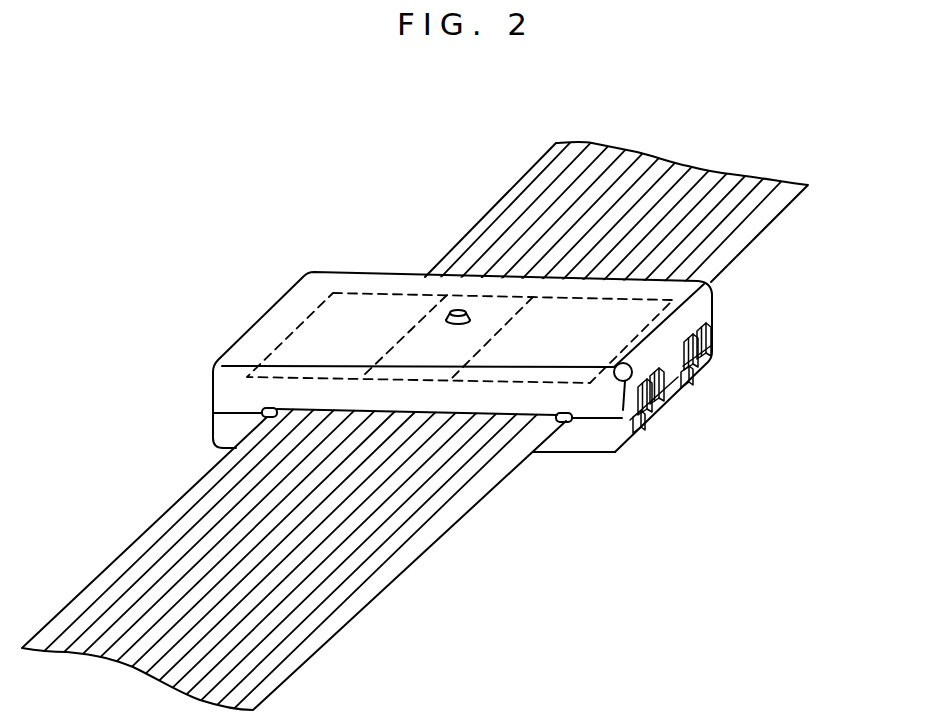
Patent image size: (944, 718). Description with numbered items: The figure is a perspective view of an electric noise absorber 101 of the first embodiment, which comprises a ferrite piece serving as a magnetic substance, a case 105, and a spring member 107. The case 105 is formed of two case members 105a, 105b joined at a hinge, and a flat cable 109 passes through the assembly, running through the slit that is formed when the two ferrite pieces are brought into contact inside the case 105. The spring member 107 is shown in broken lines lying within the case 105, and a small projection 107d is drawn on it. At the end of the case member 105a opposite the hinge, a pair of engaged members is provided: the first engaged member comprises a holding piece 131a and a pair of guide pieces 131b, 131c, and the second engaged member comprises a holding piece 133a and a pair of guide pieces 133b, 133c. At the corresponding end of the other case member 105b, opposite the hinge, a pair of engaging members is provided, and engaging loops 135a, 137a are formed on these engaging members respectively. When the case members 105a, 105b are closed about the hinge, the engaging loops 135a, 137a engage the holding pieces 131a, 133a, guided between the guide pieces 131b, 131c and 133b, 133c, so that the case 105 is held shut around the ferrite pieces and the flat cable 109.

The noise absorber 101 is at (275, 242).
The case 105 is at (272, 332).
The case member 105a is at (583, 440).
The case member 105b is at (657, 285).
The spring member 107 is at (358, 307).
The button 107d is at (468, 311).
The flat cable 109 is at (333, 623).
The holding piece 131a is at (641, 418).
The guide piece 131b is at (626, 424).
The guide piece 131c is at (658, 400).
The holding piece 133a is at (702, 367).
The guide piece 133b is at (685, 390).
The guide piece 133c is at (713, 347).
The engaging loop 135a is at (638, 428).
The engaging loop 137a is at (694, 378).